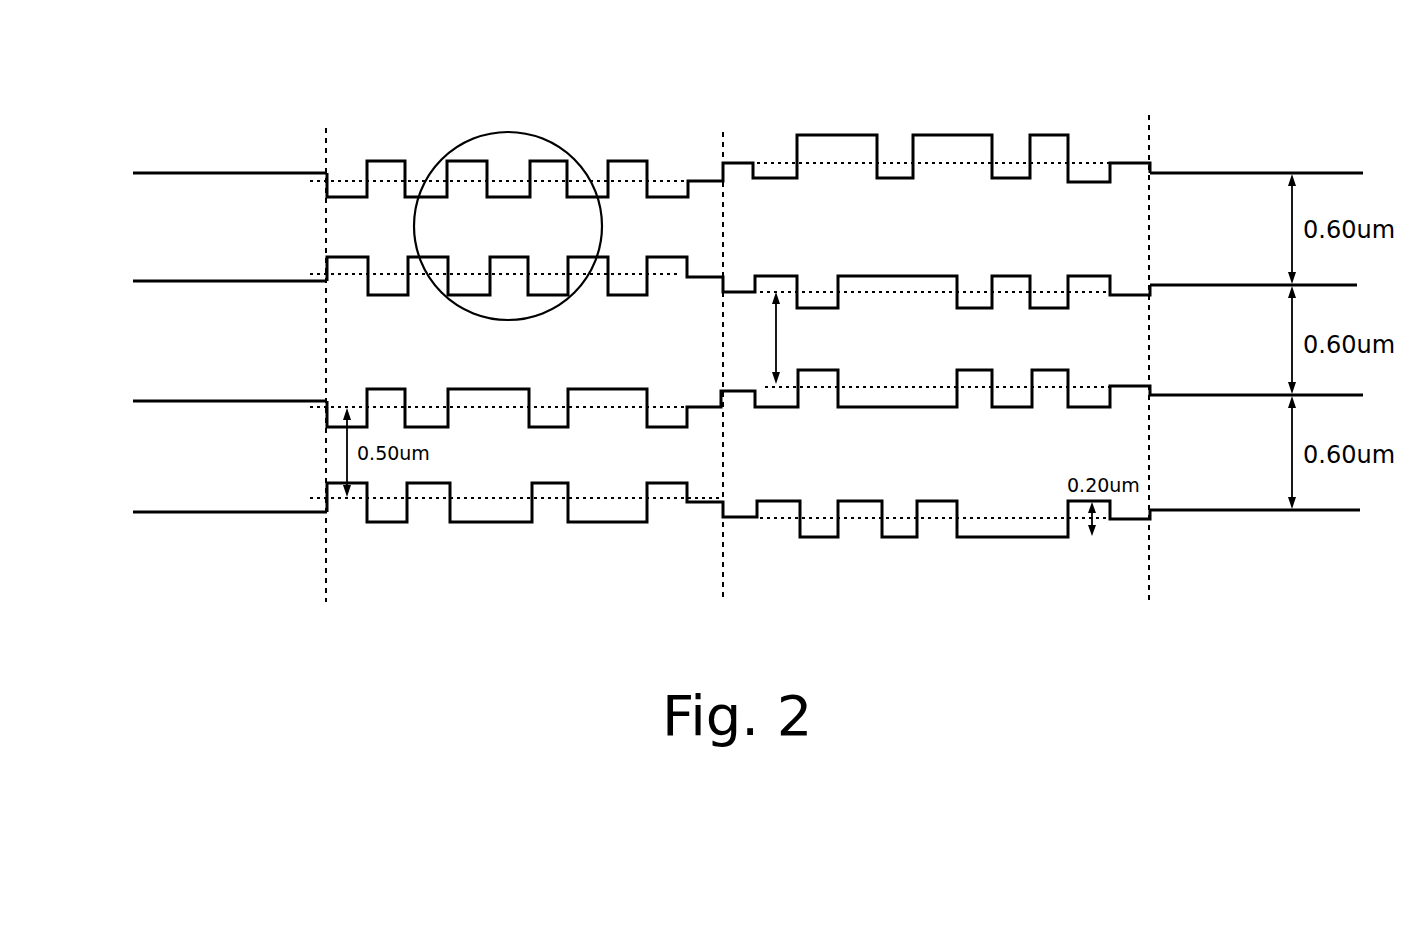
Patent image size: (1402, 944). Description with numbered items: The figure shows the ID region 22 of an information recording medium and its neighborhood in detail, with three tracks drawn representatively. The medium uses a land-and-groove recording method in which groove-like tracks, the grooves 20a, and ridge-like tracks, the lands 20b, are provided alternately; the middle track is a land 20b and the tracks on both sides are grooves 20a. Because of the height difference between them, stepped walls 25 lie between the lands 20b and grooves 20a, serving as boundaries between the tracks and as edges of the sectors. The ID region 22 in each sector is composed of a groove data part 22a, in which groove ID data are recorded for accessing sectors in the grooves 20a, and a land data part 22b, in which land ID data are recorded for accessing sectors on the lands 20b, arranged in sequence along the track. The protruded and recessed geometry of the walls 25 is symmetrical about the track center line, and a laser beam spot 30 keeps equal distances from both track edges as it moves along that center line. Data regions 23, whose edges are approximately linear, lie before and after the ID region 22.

The grooves 20a is at (214, 226).
The lands 20b is at (214, 343).
The ID region 22 is at (1143, 565).
The groove data part 22a is at (705, 220).
The land data part 22b is at (865, 320).
The data regions 23 is at (324, 558).
The stepped walls 25 is at (777, 407).
The laser beam spot 30 is at (510, 132).